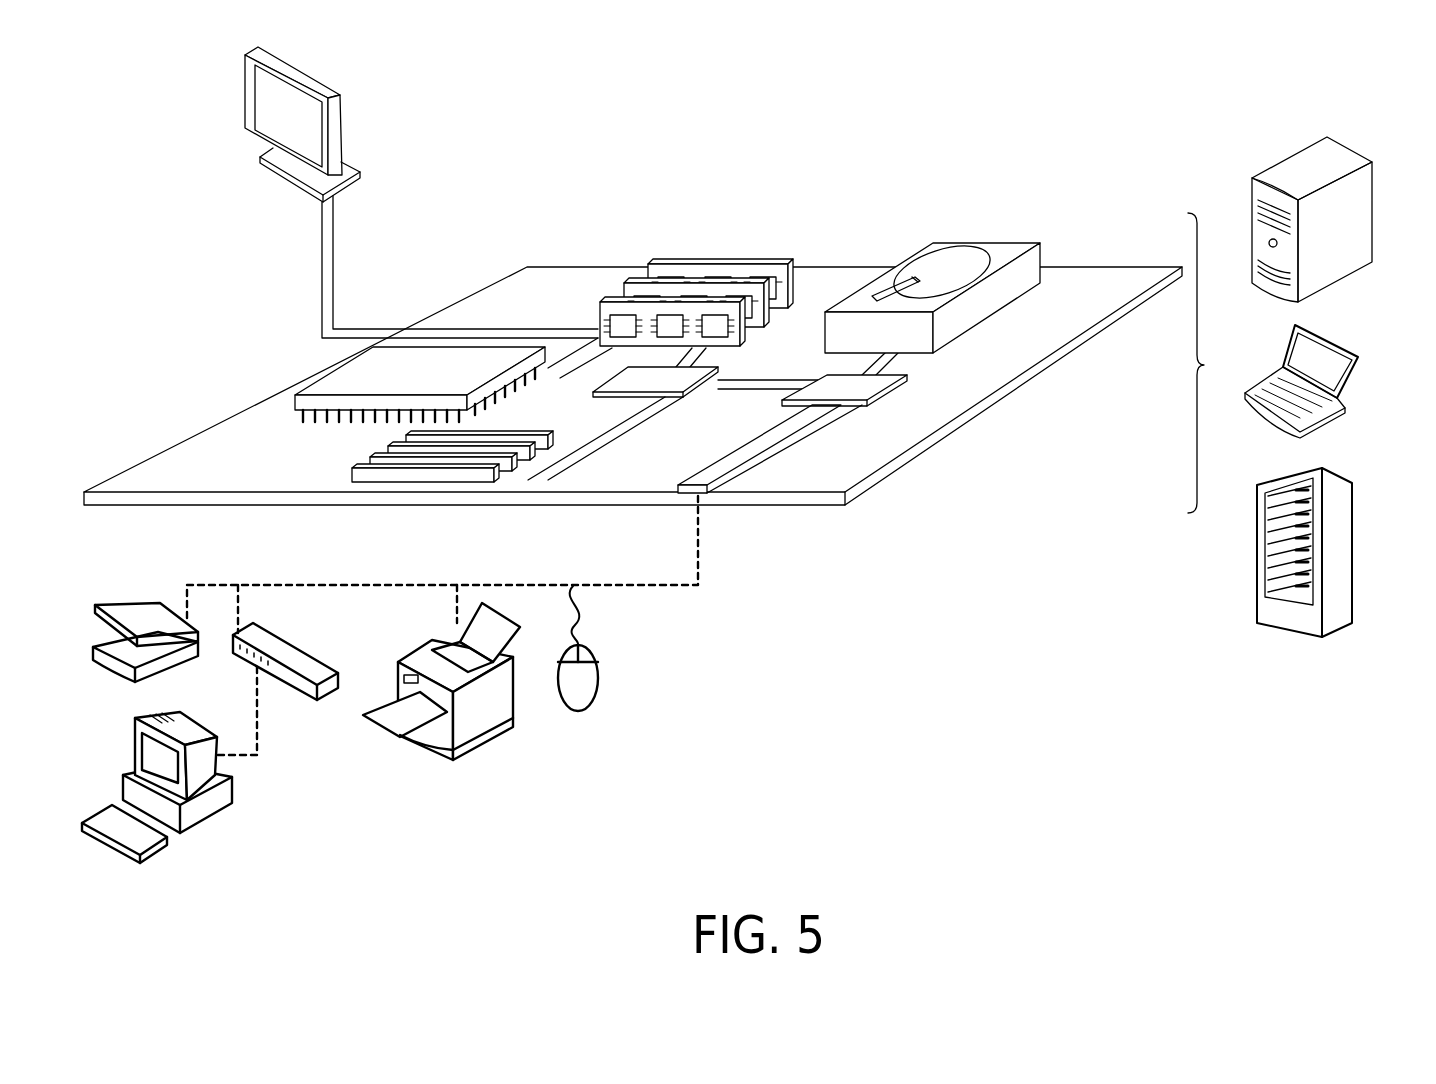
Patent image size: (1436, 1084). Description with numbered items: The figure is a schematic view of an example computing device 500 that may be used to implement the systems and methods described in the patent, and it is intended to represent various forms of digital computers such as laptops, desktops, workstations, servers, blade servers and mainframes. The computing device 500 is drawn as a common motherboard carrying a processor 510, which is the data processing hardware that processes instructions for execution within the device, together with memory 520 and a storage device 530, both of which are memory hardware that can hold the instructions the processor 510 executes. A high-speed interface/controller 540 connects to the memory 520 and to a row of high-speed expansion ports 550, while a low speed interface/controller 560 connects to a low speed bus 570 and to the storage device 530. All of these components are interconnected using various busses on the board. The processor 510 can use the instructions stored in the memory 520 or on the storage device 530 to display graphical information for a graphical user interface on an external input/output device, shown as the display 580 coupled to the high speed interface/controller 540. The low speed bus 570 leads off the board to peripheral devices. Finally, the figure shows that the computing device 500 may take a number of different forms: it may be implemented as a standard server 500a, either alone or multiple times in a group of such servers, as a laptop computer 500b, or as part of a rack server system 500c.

The computing device 500 is at (799, 112).
The standard server 500a is at (1280, 156).
The laptop computer 500b is at (1340, 338).
The rack server system 500c is at (1347, 531).
The processor 510 is at (295, 398).
The memory 520 is at (716, 262).
The storage device 530 is at (981, 243).
The high-speed interface/controller 540 is at (660, 400).
The high-speed expansion ports 550 is at (352, 470).
The low speed interface/controller 560 is at (832, 384).
The low speed bus 570 is at (711, 494).
The display 580 is at (245, 98).